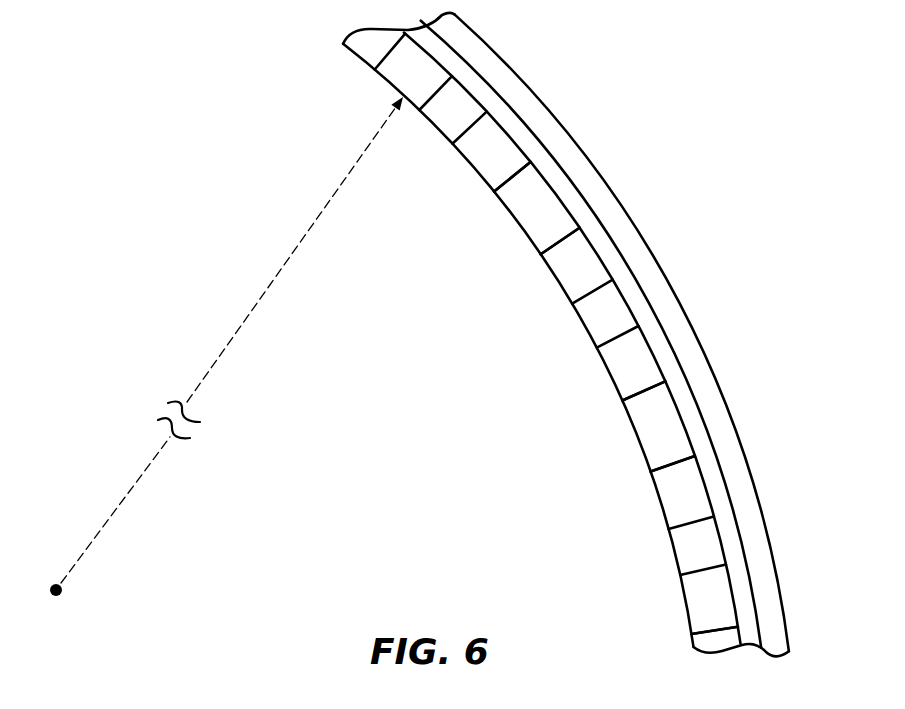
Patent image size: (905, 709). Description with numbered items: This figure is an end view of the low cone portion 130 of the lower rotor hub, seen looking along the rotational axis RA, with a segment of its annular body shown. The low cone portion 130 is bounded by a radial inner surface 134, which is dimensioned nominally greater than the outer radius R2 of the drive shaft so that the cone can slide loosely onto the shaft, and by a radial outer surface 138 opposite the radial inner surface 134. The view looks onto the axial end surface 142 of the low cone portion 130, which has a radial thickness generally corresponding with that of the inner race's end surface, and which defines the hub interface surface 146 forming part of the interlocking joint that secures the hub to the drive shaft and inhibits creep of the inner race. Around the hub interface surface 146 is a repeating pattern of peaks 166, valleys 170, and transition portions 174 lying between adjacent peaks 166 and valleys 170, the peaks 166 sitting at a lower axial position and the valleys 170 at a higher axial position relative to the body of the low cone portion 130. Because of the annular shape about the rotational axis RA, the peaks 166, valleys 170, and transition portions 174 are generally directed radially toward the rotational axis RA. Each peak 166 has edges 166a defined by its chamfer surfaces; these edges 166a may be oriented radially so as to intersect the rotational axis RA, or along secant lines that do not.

The low cone portion 130 is at (601, 133).
The radial inner surface 134 is at (672, 600).
The radial outer surface 138 is at (790, 569).
The axial end surface 142 is at (770, 662).
The hub interface surface 146 is at (719, 645).
The peaks 166 is at (453, 110).
The edges 166a is at (588, 300).
The valleys 170 is at (537, 207).
The transition portions 174 is at (493, 153).
The outer radius of the drive shaft R2 is at (275, 278).
The rotational axis RA is at (52, 587).